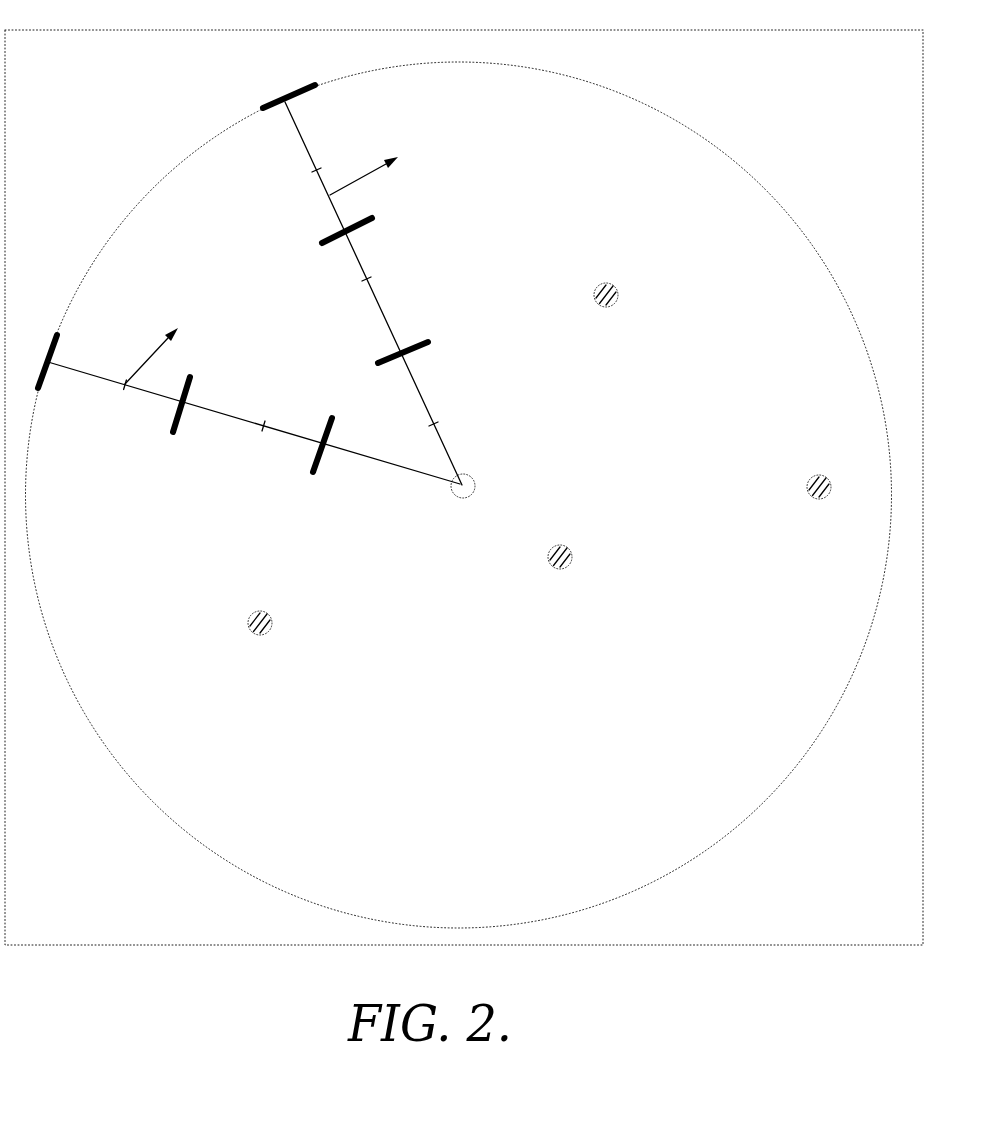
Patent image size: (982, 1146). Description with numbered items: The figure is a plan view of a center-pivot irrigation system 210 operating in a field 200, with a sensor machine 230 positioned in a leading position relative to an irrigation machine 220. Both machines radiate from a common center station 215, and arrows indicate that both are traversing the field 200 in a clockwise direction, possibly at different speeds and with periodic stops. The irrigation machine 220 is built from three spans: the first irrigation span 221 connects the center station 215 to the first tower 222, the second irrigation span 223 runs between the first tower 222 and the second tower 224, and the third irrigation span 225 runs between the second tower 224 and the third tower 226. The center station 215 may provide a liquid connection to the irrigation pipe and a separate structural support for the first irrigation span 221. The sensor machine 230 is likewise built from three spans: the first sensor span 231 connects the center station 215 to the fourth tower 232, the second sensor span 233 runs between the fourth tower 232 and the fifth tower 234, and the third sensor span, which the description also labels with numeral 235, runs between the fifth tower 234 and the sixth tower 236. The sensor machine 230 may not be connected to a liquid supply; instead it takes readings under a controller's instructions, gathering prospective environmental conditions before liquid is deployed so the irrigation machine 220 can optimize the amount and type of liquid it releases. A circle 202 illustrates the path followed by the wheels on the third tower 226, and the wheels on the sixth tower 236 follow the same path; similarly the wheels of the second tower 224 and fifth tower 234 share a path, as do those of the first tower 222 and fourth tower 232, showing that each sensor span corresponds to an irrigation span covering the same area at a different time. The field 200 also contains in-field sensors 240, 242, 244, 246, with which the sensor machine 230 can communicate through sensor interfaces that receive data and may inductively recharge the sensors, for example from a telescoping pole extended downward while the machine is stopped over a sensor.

The field 200 is at (464, 512).
The circle 202 is at (459, 495).
The center-pivot irrigation system 210 is at (401, 628).
The center station 215 is at (464, 499).
The irrigation machine 220 is at (197, 551).
The first irrigation span 221 is at (407, 473).
The first tower 222 is at (311, 468).
The second irrigation span 223 is at (262, 428).
The second tower 224 is at (172, 430).
The third irrigation span 225 is at (140, 390).
The third tower 226 is at (70, 337).
The sensor machine 230 is at (251, 278).
The first sensor span 231 is at (434, 424).
The fourth tower 232 is at (428, 343).
The second sensor span 233 is at (366, 277).
The fifth tower 234 is at (371, 219).
The second axis direction arrow 235 is at (316, 168).
The sixth tower 236 is at (314, 92).
The in-field sensor 240 is at (600, 305).
The in-field sensor 242 is at (810, 497).
The in-field sensor 244 is at (553, 567).
The in-field sensor 246 is at (252, 634).